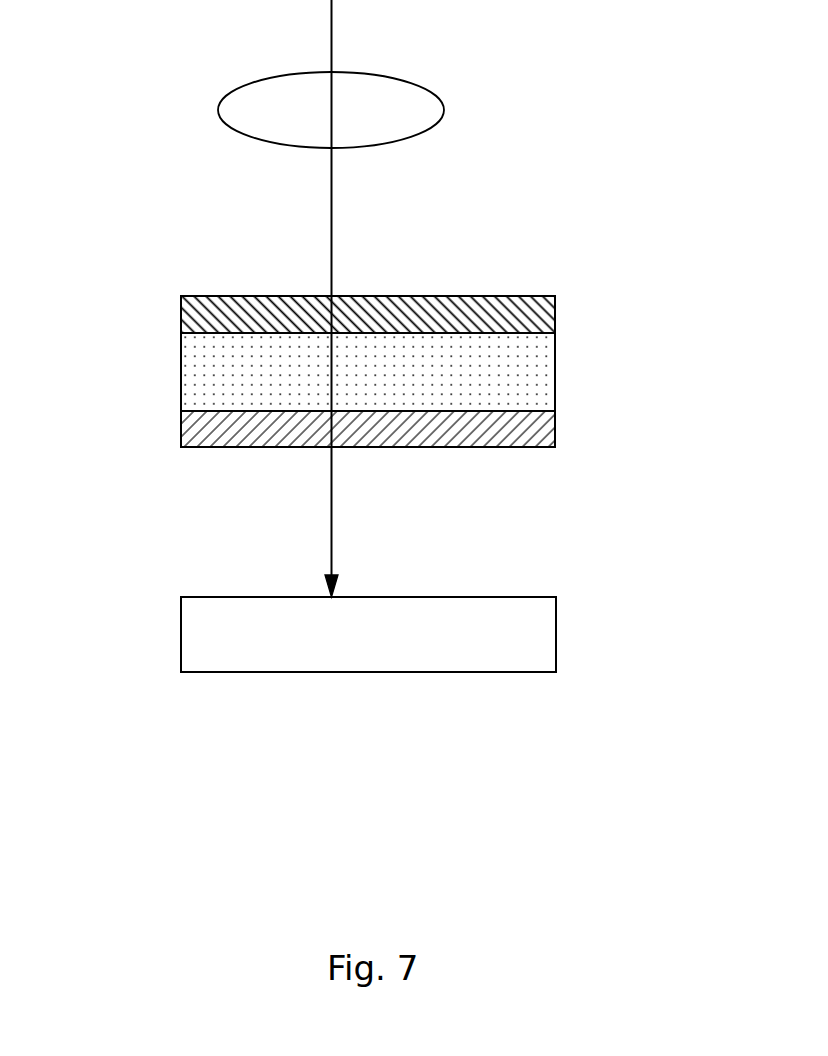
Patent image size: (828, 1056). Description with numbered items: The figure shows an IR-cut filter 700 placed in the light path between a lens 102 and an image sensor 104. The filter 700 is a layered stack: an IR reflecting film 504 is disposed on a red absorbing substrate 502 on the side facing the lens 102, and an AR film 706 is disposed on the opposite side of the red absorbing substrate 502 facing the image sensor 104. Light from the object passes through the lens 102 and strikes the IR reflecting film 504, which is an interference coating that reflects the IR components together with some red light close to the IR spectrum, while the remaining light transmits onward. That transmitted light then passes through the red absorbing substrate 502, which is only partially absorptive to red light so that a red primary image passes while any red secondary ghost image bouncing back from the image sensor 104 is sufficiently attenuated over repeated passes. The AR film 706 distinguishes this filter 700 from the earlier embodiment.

The lens 102 is at (286, 120).
The IR-cut filter 700 is at (575, 372).
The IR reflecting film 504 is at (181, 315).
The red absorbing substrate 502 is at (181, 372).
The AR film 706 is at (181, 427).
The image sensor 104 is at (238, 647).